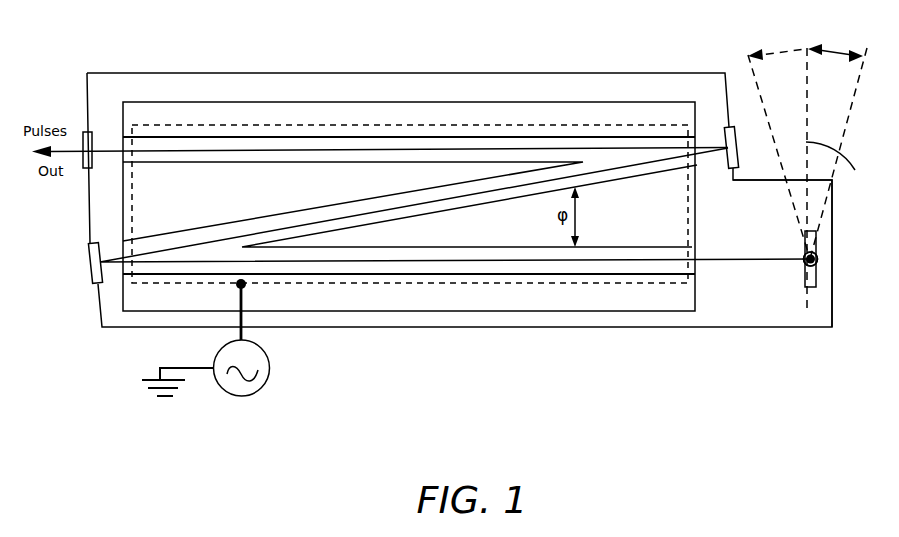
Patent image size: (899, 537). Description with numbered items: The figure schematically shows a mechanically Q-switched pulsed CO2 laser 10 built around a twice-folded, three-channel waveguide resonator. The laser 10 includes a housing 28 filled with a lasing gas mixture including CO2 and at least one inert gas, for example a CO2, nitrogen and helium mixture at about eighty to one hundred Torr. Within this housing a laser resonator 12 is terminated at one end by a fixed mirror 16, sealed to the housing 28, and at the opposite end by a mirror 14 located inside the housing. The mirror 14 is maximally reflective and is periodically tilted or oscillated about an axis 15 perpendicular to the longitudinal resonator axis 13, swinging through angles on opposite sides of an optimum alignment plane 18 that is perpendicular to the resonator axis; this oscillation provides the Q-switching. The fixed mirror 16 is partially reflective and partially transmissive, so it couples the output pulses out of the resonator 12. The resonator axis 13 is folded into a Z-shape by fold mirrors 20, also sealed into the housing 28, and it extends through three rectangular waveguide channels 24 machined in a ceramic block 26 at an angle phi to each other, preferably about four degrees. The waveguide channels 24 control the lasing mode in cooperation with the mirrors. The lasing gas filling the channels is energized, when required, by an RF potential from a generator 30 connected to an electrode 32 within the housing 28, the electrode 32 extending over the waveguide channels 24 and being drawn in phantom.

The Q-switched pulsed CO2 laser 10 is at (602, 406).
The laser resonator 12 is at (755, 250).
The longitudinal resonator axis 13 is at (170, 149).
The mirror 14 is at (813, 282).
The axis 15 is at (805, 262).
The fixed mirror 16 is at (93, 137).
The optimum alignment plane 18 is at (810, 165).
The fold mirrors 20 is at (90, 247).
The rectangular waveguide channels 24 is at (350, 209).
The ceramic block 26 is at (355, 320).
The housing 28 is at (452, 333).
The generator 30 is at (252, 393).
The electrode 32 is at (600, 283).